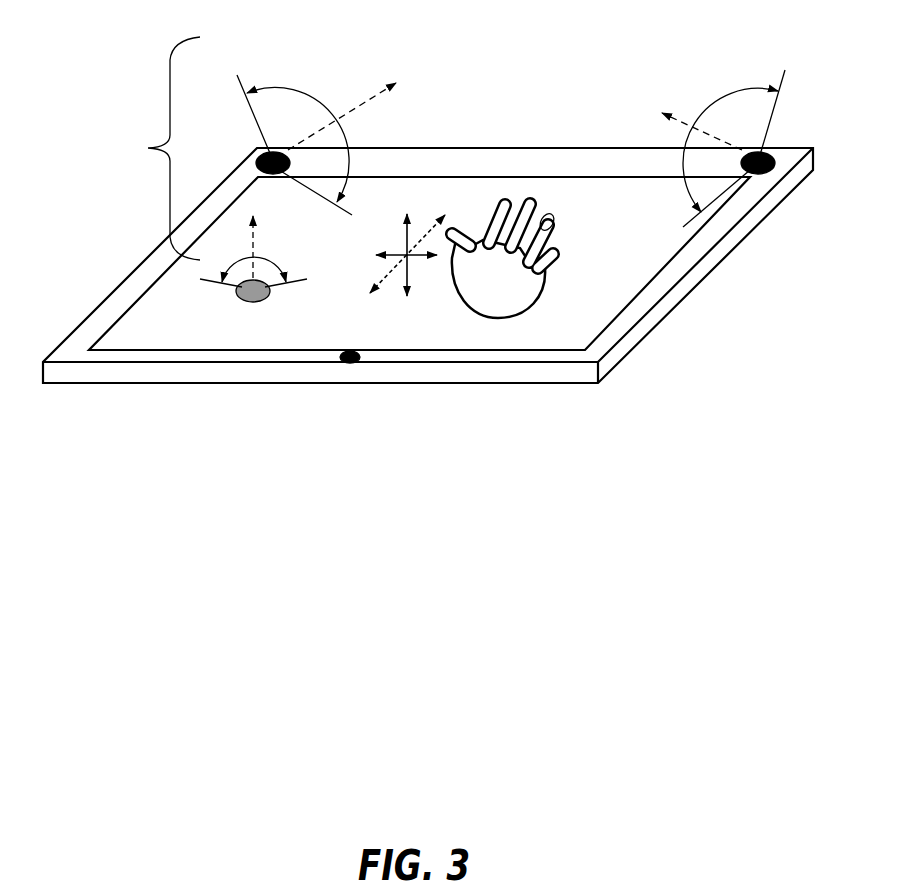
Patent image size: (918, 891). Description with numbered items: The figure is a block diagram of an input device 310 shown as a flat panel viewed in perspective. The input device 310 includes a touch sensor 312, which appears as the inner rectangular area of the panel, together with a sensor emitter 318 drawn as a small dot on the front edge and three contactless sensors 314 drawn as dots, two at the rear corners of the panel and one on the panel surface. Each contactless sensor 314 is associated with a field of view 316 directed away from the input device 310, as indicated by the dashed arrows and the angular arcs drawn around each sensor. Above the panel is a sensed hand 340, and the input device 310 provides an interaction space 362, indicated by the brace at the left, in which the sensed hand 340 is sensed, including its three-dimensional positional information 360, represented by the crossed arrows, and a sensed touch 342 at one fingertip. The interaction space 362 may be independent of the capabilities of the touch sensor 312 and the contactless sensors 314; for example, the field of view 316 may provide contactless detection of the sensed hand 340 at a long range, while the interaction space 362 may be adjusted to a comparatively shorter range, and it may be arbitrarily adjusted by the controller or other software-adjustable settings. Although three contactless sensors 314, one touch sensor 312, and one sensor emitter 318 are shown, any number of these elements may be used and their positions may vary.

The input device 310 is at (510, 148).
The touch sensor 312 is at (678, 253).
The contactless sensor 314 is at (275, 152).
The field of view 316 is at (757, 46).
The sensor emitter 318 is at (344, 352).
The sensed hand 340 is at (502, 261).
The sensed touch 342 is at (552, 216).
The 3D positional information 360 is at (405, 257).
The interaction space 362 is at (148, 148).